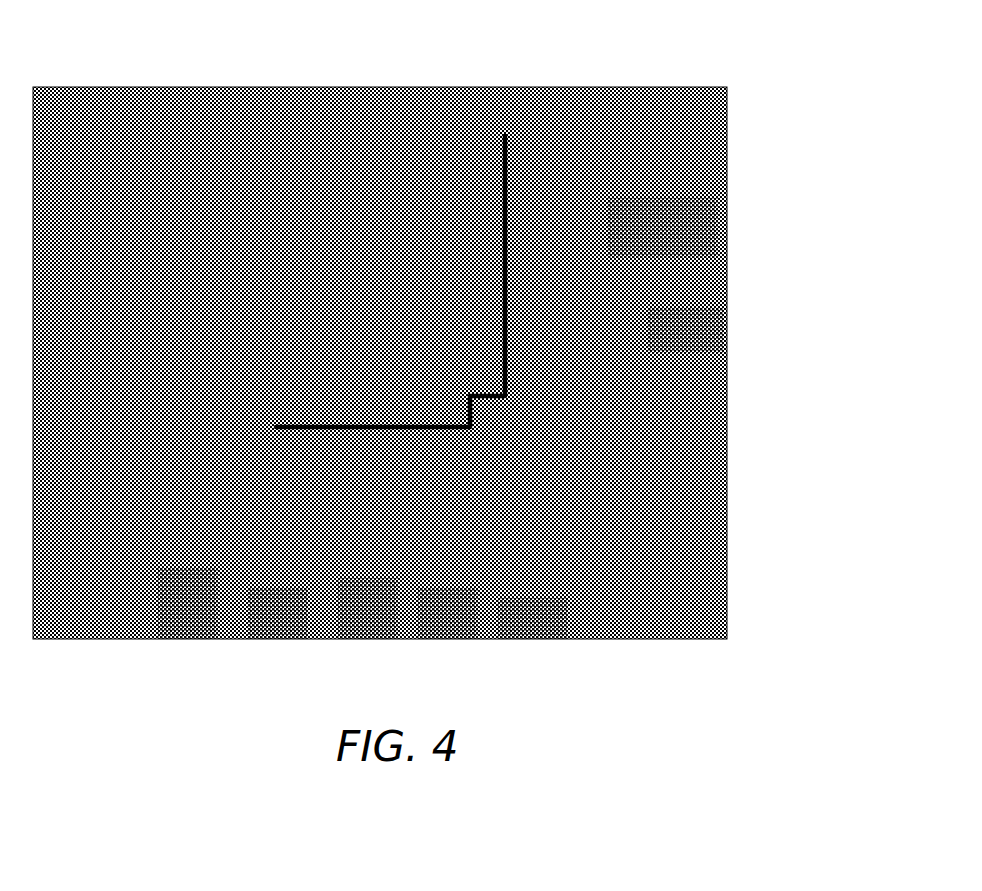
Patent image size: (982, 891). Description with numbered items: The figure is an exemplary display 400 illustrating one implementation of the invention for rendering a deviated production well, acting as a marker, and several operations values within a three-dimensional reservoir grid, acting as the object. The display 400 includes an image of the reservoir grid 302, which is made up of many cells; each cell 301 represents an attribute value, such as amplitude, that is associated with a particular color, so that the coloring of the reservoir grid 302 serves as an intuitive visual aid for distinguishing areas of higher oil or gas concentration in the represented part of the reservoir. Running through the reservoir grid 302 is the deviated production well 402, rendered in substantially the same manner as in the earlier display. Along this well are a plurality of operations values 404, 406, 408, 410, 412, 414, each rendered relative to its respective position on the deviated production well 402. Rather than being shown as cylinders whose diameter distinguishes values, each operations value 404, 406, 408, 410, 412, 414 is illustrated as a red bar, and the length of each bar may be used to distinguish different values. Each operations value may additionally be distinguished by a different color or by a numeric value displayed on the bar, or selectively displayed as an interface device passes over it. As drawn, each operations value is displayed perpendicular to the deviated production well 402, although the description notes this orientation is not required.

The display 400 is at (535, 60).
The reservoir grid 302 is at (632, 79).
The cell 301 is at (700, 215).
The operations value 404 is at (700, 325).
The deviated production well 402 is at (455, 79).
The operations value 406 is at (523, 631).
The operations value 408 is at (437, 631).
The operations value 410 is at (360, 631).
The operations value 412 is at (262, 631).
The operations value 414 is at (180, 631).